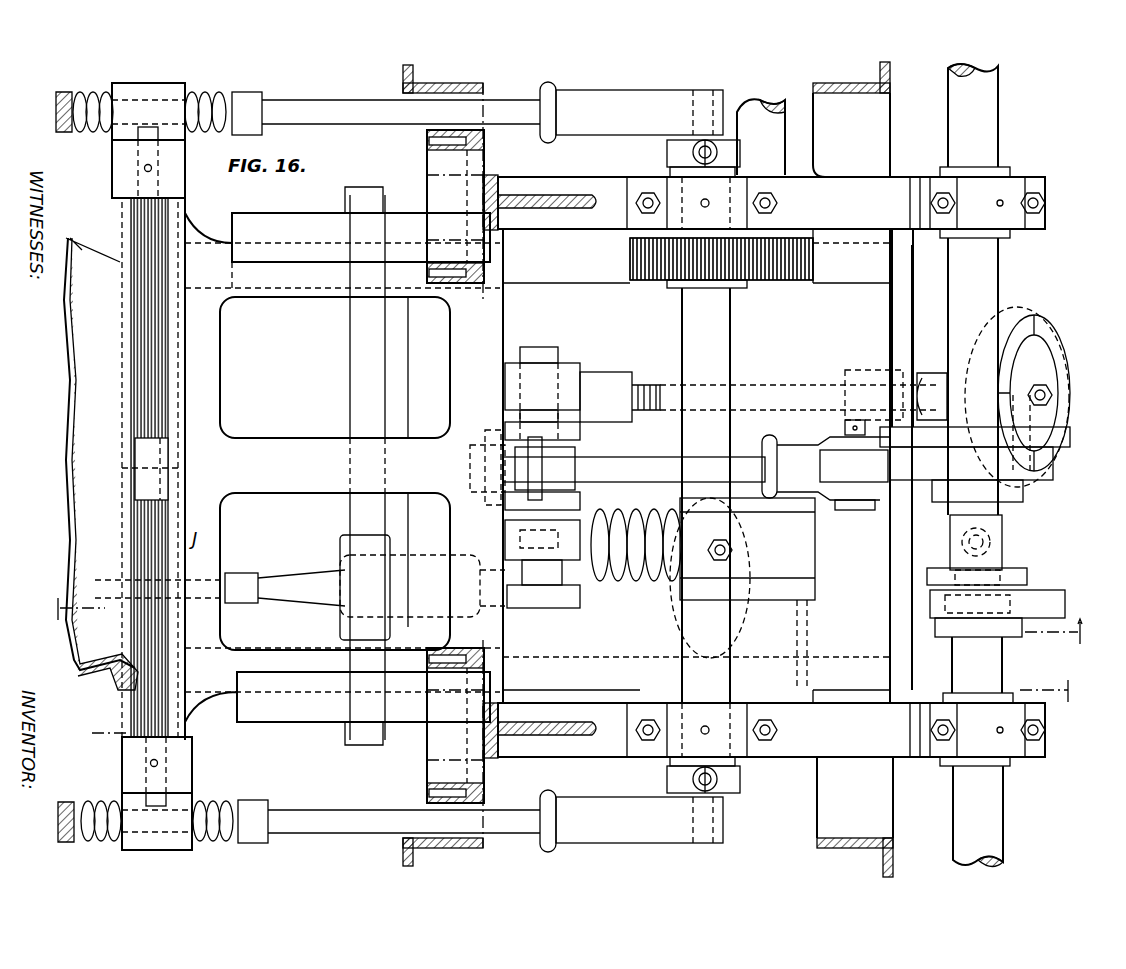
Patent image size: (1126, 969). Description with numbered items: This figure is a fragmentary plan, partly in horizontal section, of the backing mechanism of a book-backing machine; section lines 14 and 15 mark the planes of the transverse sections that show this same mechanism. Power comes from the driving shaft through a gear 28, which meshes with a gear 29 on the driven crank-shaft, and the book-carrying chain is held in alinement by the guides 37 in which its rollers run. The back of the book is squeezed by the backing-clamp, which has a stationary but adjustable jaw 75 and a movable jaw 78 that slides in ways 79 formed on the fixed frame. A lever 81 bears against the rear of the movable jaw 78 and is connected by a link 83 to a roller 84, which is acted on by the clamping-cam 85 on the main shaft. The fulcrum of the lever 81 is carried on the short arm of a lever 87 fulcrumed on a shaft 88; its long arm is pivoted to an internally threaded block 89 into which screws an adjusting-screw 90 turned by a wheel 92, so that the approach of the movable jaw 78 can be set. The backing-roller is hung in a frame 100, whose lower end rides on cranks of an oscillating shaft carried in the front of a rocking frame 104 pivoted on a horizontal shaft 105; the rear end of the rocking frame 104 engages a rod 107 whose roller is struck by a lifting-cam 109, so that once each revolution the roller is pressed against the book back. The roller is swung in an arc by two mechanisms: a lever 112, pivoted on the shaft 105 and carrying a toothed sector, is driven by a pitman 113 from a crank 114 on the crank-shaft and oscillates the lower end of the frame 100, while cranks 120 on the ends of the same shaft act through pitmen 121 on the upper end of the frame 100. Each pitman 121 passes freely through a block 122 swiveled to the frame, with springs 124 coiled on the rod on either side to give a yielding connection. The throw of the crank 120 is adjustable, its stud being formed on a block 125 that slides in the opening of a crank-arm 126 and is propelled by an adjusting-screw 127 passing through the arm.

The section line 14 14 is at (582, 711).
The section line 15 15 is at (571, 621).
The gear 28 is at (813, 260).
The gear 29 is at (630, 258).
The guide 37 is at (478, 172).
The stationary jaw 75 is at (101, 464).
The movable jaw 78 is at (335, 473).
The ways 79 is at (342, 466).
The lever 81 is at (585, 488).
The link 83 is at (623, 467).
The roller 84 is at (833, 465).
The clamping-cam 85 is at (1050, 478).
The lever 87 is at (632, 438).
The shaft 88 is at (537, 358).
The block 89 is at (620, 397).
The adjusting-screw 90 is at (768, 393).
The wheel 92 is at (1036, 320).
The frame 100 is at (120, 183).
The rocking frame 104 is at (552, 283).
The horizontal shaft 105 is at (352, 376).
The rod 107 is at (985, 550).
The lifting-cam 109 is at (1058, 605).
The lever 112 is at (300, 587).
The pitman 113 is at (636, 534).
The crank 114 is at (742, 594).
The crank 120 is at (698, 100).
The pitman 121 is at (386, 467).
The block 122 is at (143, 97).
The spring 124 is at (94, 130).
The block 125 is at (733, 106).
The crank-arm 126 is at (667, 153).
The adjusting-screw 127 is at (692, 142).